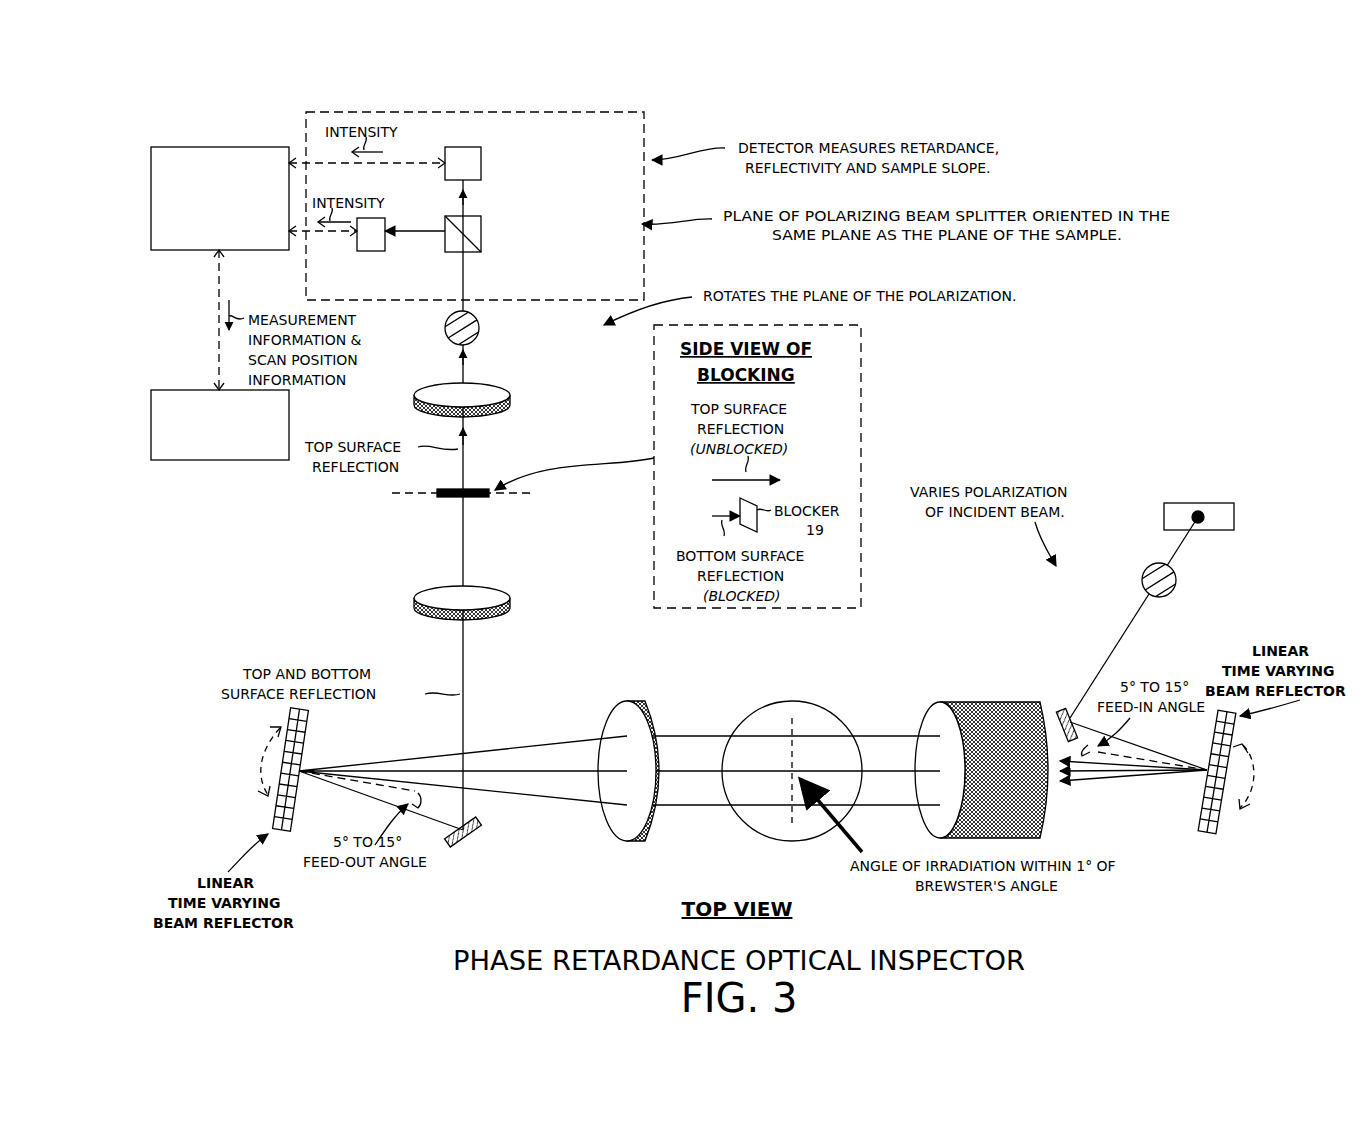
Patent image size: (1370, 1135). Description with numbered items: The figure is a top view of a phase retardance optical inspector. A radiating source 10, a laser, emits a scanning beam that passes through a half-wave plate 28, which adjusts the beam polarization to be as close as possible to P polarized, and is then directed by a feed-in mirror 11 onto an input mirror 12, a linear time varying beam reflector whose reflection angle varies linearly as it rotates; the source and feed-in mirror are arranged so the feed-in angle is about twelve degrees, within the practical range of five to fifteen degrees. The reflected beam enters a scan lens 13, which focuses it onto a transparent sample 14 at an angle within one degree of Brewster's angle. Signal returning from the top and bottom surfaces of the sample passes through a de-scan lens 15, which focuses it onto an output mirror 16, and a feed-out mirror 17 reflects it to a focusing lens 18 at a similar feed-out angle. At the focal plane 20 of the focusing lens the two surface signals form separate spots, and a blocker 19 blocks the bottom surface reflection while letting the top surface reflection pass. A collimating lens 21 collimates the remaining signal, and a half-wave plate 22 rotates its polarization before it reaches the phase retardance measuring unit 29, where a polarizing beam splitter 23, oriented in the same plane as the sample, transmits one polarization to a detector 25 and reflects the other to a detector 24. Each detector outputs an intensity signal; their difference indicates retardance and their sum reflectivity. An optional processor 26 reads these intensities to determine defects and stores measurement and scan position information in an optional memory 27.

The radiating source 10 is at (1200, 503).
The feed-in mirror 11 is at (1066, 708).
The input mirror 12 is at (1215, 832).
The scan lens 13 is at (982, 702).
The transparent sample 14 is at (792, 701).
The de-scan lens 15 is at (636, 701).
The output mirror 16 is at (270, 818).
The feed-out mirror 17 is at (470, 843).
The focusing lens 18 is at (414, 607).
The blocker 19 is at (437, 496).
The focal plane 20 is at (403, 502).
The collimating lens 21 is at (522, 401).
The half-wave plate 22 is at (479, 327).
The polarizing beam splitter 23 is at (481, 232).
The first detector 24 is at (373, 251).
The second detector 25 is at (481, 166).
The processor 26 is at (220, 198).
The memory 27 is at (220, 425).
The half-wave plate 28 is at (1141, 578).
The phase retardance measuring unit 29 is at (644, 112).